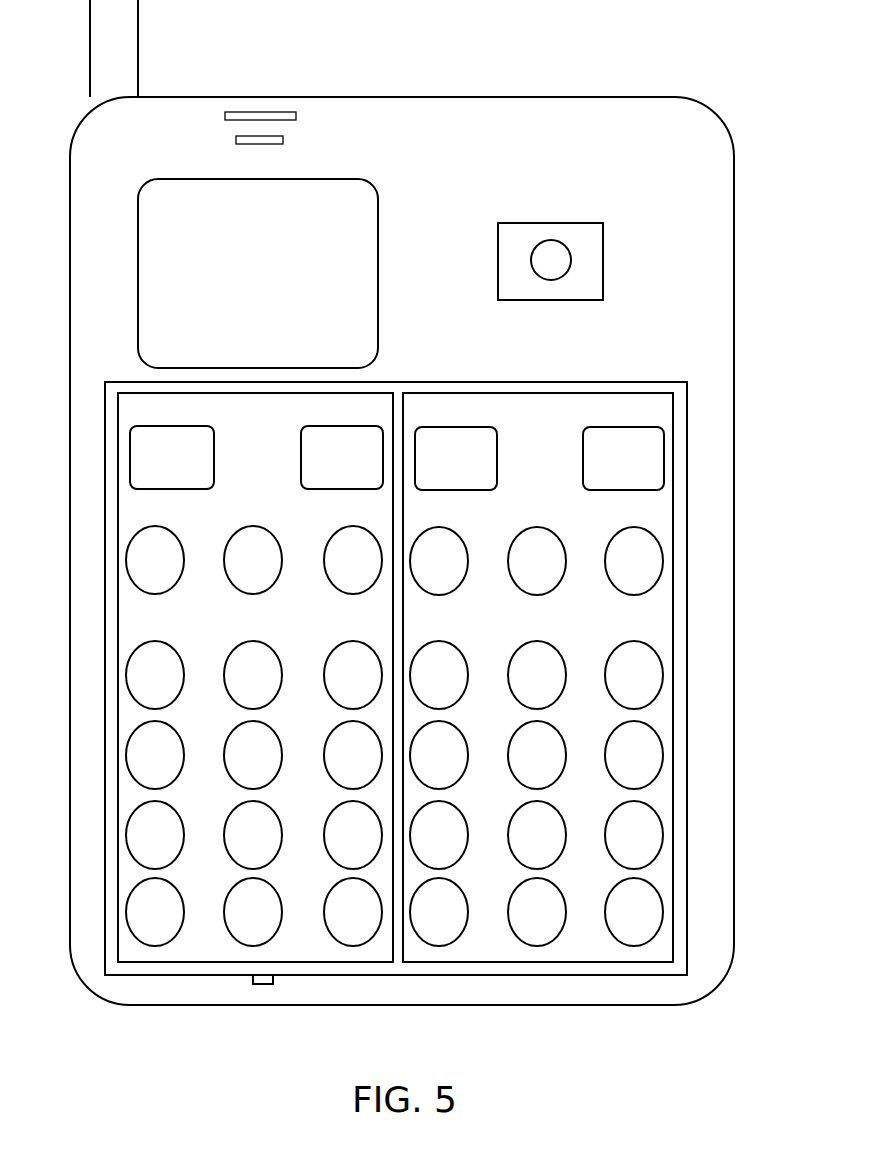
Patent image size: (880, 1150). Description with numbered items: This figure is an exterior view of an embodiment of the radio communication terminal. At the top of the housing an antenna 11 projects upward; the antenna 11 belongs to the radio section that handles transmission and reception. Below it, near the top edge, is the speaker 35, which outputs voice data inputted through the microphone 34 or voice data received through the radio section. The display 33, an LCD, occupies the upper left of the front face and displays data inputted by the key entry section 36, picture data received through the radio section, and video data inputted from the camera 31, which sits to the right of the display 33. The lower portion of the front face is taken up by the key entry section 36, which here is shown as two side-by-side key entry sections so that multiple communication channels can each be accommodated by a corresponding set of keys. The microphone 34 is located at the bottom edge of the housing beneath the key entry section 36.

The antenna 11 is at (90, 45).
The camera 31 is at (534, 223).
The display 33 is at (378, 205).
The microphone 34 is at (263, 984).
The speaker 35 is at (286, 112).
The key entry section 36 is at (687, 663).